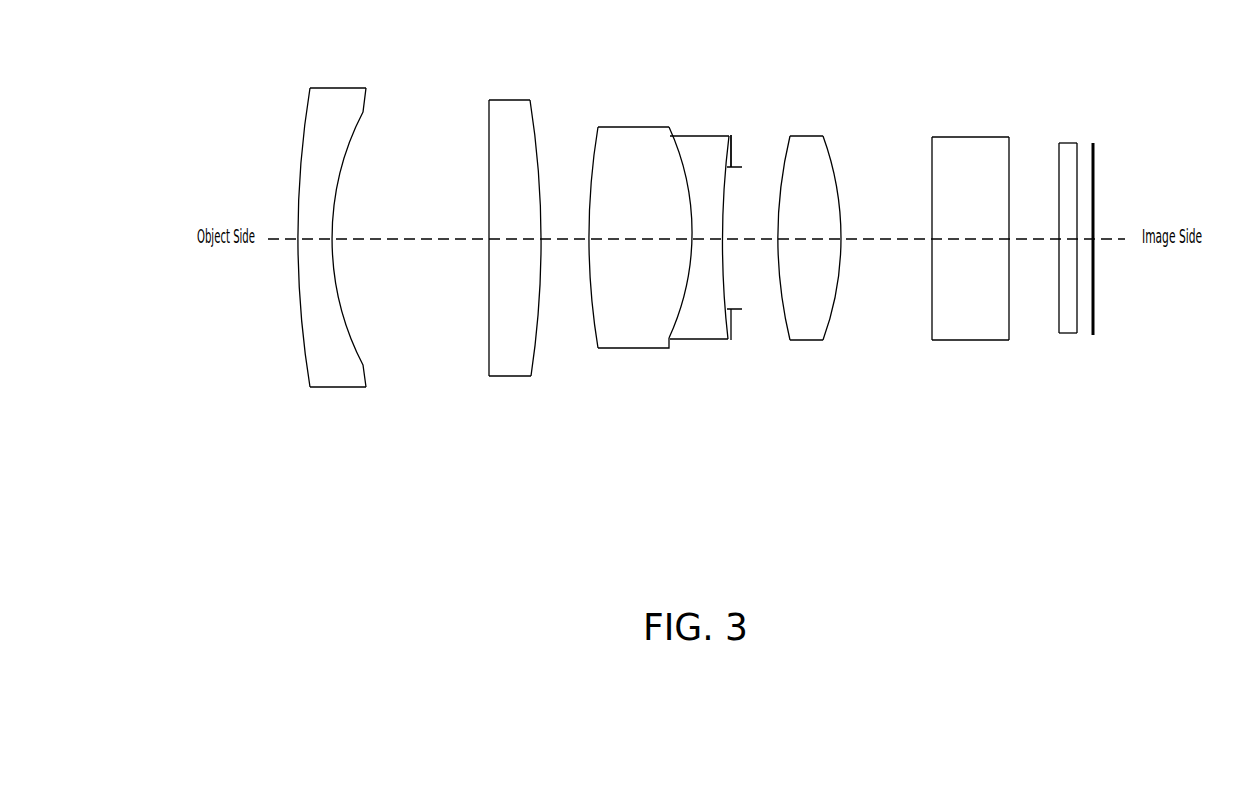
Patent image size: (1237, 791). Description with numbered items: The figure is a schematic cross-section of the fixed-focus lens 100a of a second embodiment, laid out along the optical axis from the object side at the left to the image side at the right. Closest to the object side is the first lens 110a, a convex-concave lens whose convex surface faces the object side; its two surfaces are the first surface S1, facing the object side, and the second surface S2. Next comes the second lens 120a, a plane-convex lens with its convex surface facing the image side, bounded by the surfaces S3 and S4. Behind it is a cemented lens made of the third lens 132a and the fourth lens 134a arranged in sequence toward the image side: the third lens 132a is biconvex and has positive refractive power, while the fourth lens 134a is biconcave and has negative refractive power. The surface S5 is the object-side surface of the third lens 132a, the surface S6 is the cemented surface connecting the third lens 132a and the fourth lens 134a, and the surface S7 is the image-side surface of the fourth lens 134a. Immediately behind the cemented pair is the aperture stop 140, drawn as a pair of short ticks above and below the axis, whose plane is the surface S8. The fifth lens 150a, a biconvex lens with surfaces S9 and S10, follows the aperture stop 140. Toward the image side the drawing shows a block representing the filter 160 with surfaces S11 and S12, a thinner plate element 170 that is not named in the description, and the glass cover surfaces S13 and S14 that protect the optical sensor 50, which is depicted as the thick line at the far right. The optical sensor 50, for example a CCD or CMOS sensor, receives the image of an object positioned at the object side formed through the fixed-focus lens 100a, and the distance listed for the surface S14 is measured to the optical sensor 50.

The fixed-focus lens 100a is at (1192, 486).
The first lens 110a is at (338, 245).
The second lens 120a is at (509, 245).
The third lens 132a is at (636, 245).
The fourth lens 134a is at (699, 245).
The aperture stop 140 is at (759, 245).
The fifth lens 150a is at (816, 245).
The filter 160 is at (971, 245).
The filter / cover glass 170 is at (1065, 245).
The optical sensor 50 is at (1093, 336).
The first surface S1 is at (305, 125).
The second surface S2 is at (350, 143).
The third surface S3 is at (488, 125).
The fourth surface S4 is at (533, 122).
The fifth surface S5 is at (591, 192).
The sixth surface S6 is at (682, 172).
The seventh surface S7 is at (722, 192).
The eighth surface S8 is at (732, 150).
The ninth surface S9 is at (787, 141).
The tenth surface S10 is at (828, 140).
The eleventh surface S11 is at (932, 150).
The twelfth surface S12 is at (1010, 150).
The thirteenth surface S13 is at (1059, 168).
The fourteenth surface S14 is at (1078, 162).